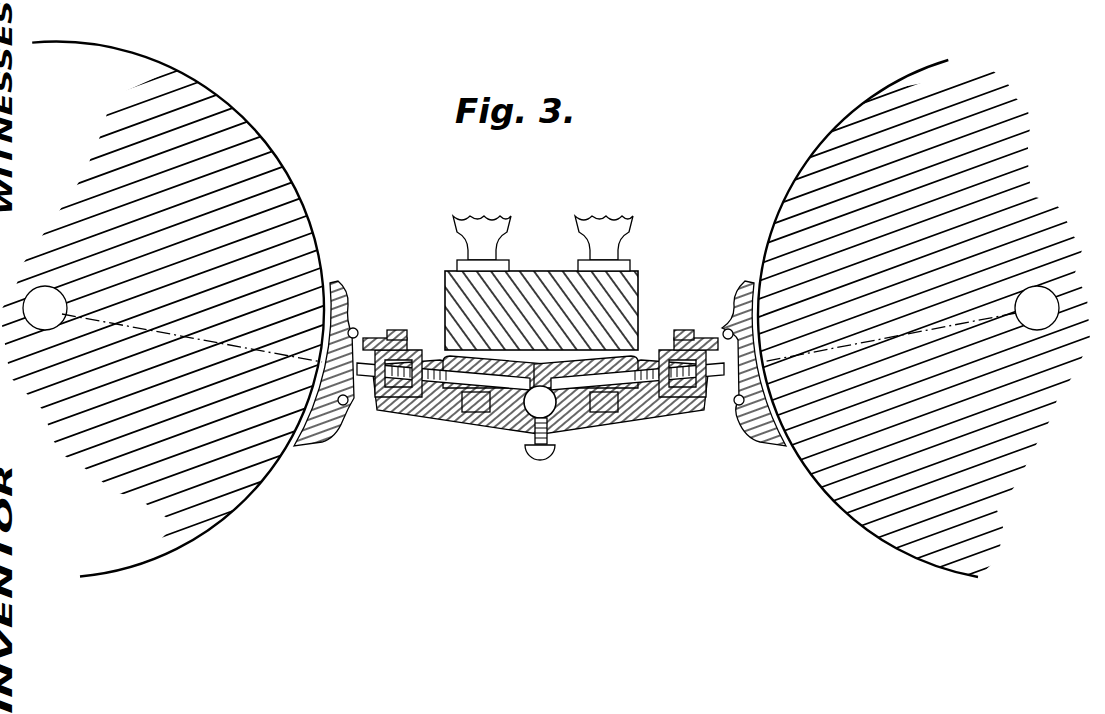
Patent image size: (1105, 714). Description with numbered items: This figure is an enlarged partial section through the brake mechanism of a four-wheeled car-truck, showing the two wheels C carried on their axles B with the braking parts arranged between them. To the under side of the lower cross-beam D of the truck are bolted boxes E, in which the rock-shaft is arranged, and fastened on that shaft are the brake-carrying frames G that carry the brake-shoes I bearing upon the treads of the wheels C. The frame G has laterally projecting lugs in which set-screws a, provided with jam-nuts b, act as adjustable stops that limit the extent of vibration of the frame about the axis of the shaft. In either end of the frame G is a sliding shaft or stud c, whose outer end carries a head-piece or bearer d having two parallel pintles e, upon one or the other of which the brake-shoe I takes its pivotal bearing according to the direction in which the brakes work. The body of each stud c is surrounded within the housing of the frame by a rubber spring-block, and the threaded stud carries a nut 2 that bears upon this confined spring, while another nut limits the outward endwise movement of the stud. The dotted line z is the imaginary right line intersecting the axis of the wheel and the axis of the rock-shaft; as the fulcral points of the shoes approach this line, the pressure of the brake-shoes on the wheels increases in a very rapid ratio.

The wheels C is at (552, 355).
The axles B is at (541, 308).
The dotted line z is at (539, 337).
The lower cross-beam D is at (541, 283).
The brake-shoes I is at (540, 363).
The brake-carrying frames G is at (540, 403).
The sliding shaft or stud c is at (540, 376).
The nut 2 is at (540, 363).
The head-piece or bearer d is at (592, 360).
The set-screws a is at (541, 402).
The jam-nuts b is at (542, 387).
The boxes E is at (540, 423).
The pintles or arbors e is at (541, 367).